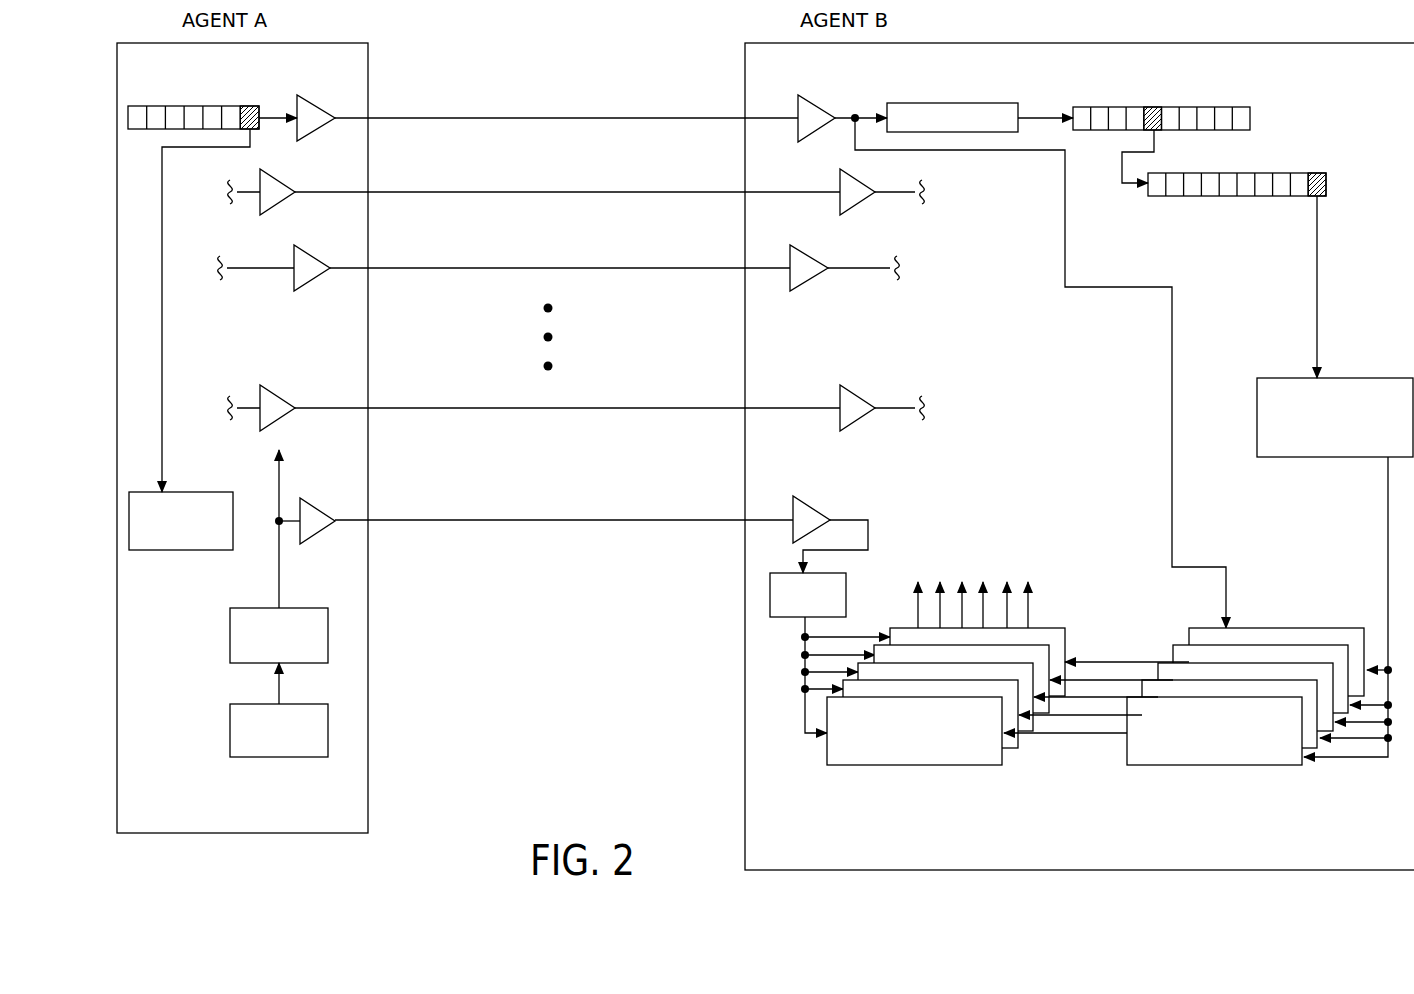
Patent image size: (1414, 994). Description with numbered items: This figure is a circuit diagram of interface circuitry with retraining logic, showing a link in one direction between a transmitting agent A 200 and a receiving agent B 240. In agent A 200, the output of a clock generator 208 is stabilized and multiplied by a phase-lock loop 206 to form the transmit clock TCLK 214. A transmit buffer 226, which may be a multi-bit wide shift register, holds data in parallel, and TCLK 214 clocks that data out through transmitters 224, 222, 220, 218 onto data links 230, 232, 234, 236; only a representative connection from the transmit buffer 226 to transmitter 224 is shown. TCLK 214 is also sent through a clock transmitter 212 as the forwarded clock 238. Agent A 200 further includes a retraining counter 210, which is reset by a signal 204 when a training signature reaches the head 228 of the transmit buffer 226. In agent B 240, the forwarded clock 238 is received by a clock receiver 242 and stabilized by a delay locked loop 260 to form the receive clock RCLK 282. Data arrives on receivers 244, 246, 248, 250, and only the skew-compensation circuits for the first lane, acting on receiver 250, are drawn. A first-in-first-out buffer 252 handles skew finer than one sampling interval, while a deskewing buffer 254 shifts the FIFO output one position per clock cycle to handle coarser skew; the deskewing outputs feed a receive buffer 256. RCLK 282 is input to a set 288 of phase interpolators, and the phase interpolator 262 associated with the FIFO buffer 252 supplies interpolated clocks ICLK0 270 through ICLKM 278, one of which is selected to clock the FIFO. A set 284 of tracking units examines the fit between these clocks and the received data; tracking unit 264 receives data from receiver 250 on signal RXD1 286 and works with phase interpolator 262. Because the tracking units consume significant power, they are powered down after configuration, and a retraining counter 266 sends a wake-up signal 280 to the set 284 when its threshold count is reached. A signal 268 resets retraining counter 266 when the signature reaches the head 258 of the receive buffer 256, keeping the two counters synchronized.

The agent A 200 is at (242, 438).
The signal 204 is at (163, 333).
The phase-lock loop (PLL) 206 is at (230, 630).
The clock generator 208 is at (230, 723).
The retraining counter 210 is at (172, 491).
The clock transmitter 212 is at (306, 508).
The transmit clock (TCLK) 214 is at (277, 471).
The transmitter 218 is at (272, 406).
The transmitter 220 is at (306, 259).
The transmitter 222 is at (272, 184).
The transmitter 224 is at (308, 100).
The transmit buffer 226 is at (232, 105).
The head of the transmit buffer 228 is at (249, 106).
The data link 230 is at (467, 117).
The data link 232 is at (467, 191).
The data link 234 is at (467, 267).
The data link 236 is at (467, 407).
The forwarded clock 238 is at (482, 522).
The agent B 240 is at (1079, 456).
The clock receiver 242 is at (805, 508).
The receiver 244 is at (846, 404).
The receiver 246 is at (808, 260).
The receiver 248 is at (862, 188).
The receiver 250 is at (812, 108).
The first-in-first-out (FIFO) buffer 252 is at (940, 103).
The deskewing buffer 254 is at (1240, 107).
The receive buffer 256 is at (1208, 173).
The head of receive buffer 258 is at (1320, 187).
The delay locked loop (DLL) 260 is at (770, 591).
The phase interpolator 262 is at (1055, 627).
The tracking unit 264 is at (1322, 628).
The retraining counter 266 is at (1275, 378).
The signal 268 is at (1318, 264).
The interpolated clock ICLK0 270 is at (918, 600).
The interpolated clock ICLKM 278 is at (1028, 600).
The wake-up signal 280 is at (1388, 524).
The receive clock (RCLK) 282 is at (803, 642).
The set of tracking units 284 is at (1160, 766).
The signal RXD1 286 is at (1172, 406).
The set of phase interpolators 288 is at (890, 766).